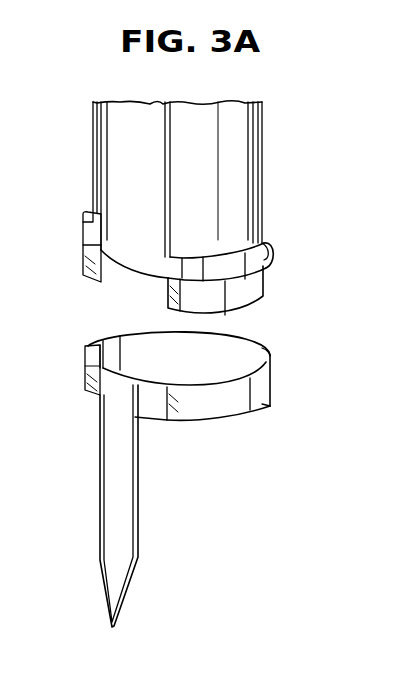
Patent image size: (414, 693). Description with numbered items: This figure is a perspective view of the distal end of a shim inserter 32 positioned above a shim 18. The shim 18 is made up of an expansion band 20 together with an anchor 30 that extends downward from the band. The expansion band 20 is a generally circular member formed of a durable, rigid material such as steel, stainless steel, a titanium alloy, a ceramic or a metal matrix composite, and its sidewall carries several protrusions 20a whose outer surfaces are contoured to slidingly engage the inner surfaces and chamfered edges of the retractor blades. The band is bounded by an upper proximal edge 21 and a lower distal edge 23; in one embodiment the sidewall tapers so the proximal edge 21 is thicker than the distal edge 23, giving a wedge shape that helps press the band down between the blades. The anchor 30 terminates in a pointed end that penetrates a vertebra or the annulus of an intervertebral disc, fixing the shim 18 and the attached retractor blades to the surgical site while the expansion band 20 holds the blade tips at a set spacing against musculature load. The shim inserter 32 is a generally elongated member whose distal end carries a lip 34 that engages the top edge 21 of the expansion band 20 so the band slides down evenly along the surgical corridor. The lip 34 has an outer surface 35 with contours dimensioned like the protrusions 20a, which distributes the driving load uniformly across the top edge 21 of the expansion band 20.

The shim 18 is at (166, 545).
The expansion band 20 is at (251, 420).
The protrusions 20a is at (95, 340).
The proximal edge 21 is at (270, 360).
The distal edge 23 is at (266, 408).
The anchor 30 is at (79, 503).
The shim inserter 32 is at (281, 139).
The lip 34 is at (262, 229).
The outer surface 35 is at (256, 256).